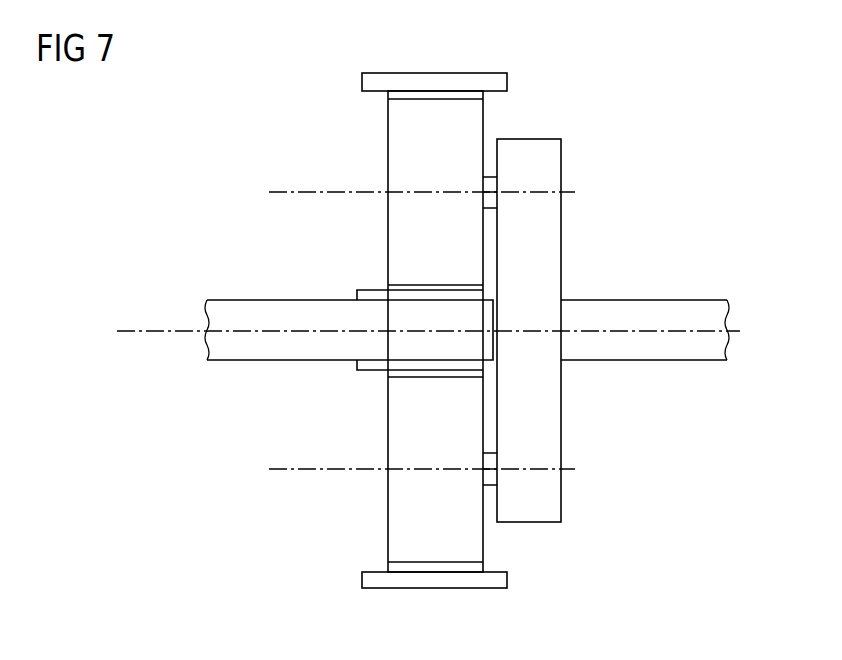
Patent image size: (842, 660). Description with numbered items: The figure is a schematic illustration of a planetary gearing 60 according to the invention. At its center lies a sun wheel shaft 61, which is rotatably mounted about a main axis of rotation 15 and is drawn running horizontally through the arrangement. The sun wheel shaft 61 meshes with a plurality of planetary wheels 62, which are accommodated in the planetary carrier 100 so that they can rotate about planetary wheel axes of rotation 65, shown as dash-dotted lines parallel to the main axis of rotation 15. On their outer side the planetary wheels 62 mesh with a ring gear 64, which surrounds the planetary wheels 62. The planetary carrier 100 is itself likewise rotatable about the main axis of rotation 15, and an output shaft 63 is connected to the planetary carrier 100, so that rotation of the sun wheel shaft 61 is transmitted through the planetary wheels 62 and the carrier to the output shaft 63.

The main axis of rotation 15 is at (132, 330).
The planetary gearing 60 is at (140, 195).
The sun wheel shaft 61 is at (243, 300).
The planetary wheels 62 is at (388, 140).
The output shaft 63 is at (680, 300).
The ring gear 64 is at (362, 578).
The planetary wheel axes of rotation 65 is at (280, 190).
The planetary carrier 100 is at (561, 163).